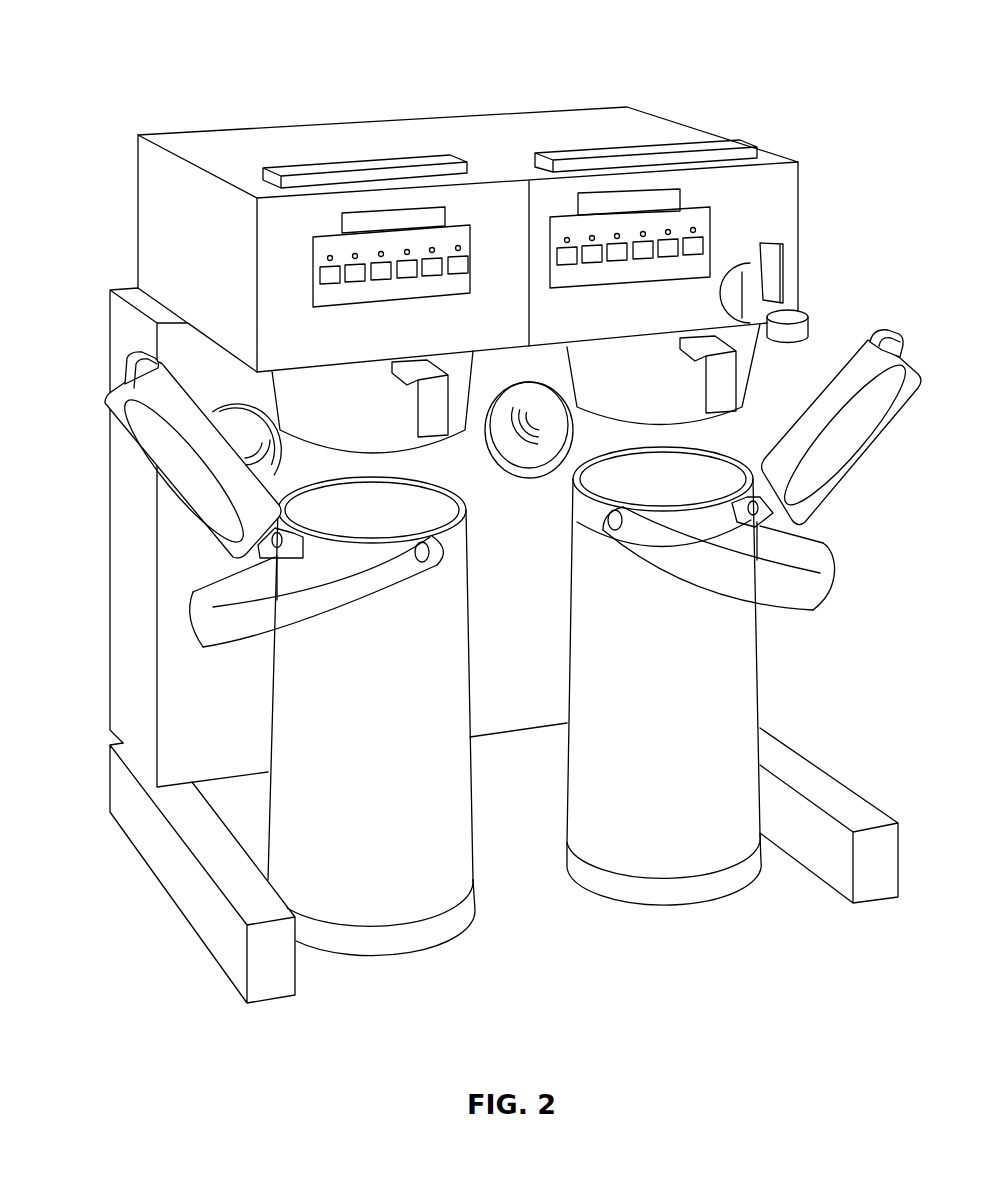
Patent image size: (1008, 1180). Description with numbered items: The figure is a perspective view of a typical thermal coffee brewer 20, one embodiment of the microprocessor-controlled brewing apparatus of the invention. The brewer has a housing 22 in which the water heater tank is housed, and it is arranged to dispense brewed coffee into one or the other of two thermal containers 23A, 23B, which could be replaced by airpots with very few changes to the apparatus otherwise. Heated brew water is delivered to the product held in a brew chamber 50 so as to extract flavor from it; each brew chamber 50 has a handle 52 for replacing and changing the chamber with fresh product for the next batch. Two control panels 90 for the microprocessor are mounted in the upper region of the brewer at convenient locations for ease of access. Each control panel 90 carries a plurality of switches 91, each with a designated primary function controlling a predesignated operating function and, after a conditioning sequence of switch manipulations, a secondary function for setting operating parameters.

The thermal coffee brewer 20 is at (668, 83).
The housing 22 is at (133, 549).
The thermal container 23A is at (413, 890).
The thermal container 23B is at (688, 842).
The brew chamber 50 is at (360, 419).
The handle 52 is at (437, 427).
The control panel 90 is at (462, 225).
The switches 91 is at (330, 284).